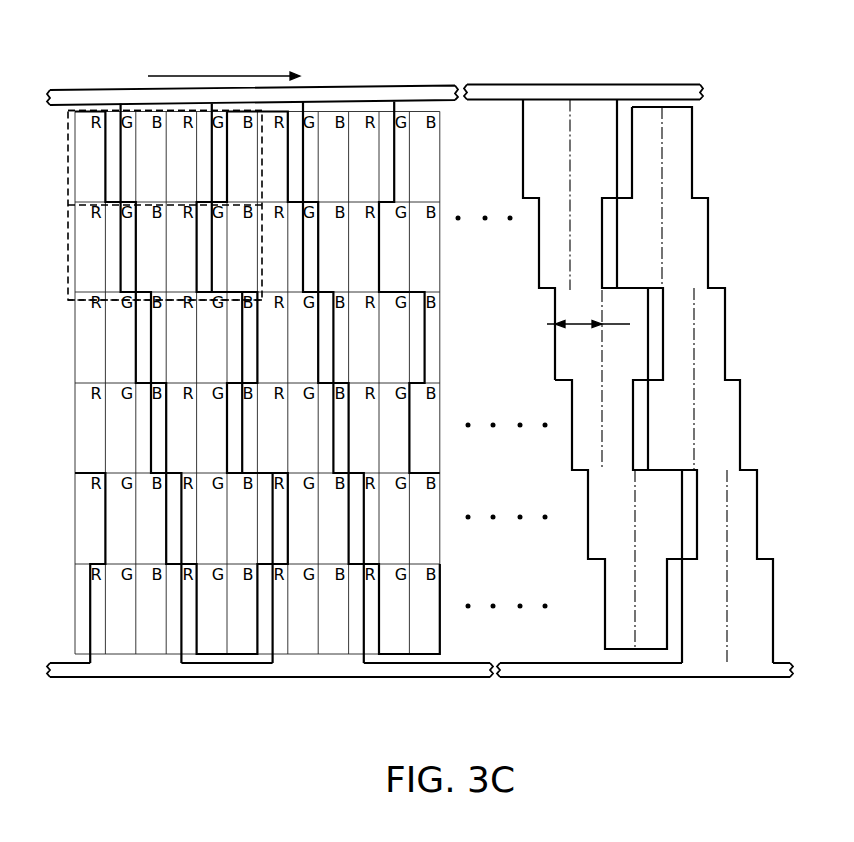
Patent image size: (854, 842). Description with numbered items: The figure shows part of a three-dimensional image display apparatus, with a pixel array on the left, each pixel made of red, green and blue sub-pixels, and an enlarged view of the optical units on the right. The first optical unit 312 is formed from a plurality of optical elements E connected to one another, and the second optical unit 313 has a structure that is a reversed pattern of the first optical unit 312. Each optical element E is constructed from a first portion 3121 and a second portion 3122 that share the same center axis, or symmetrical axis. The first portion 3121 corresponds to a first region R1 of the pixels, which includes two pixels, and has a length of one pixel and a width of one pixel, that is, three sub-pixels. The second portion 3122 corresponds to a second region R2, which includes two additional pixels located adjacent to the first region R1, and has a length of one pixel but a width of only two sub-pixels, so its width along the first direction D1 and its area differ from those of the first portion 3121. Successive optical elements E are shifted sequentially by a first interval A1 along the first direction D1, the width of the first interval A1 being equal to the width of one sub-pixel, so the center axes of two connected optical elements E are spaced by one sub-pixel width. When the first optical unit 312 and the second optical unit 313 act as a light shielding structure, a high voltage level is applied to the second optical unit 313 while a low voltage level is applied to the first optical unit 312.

The first optical unit 312 is at (583, 330).
The second optical unit 313 is at (703, 665).
The first portion 3121 is at (555, 338).
The second portion 3122 is at (572, 413).
The first region R1 is at (68, 173).
The second region R2 is at (68, 270).
The first direction D1 is at (224, 65).
The first interval A1 is at (588, 315).
The optical element E is at (475, 330).